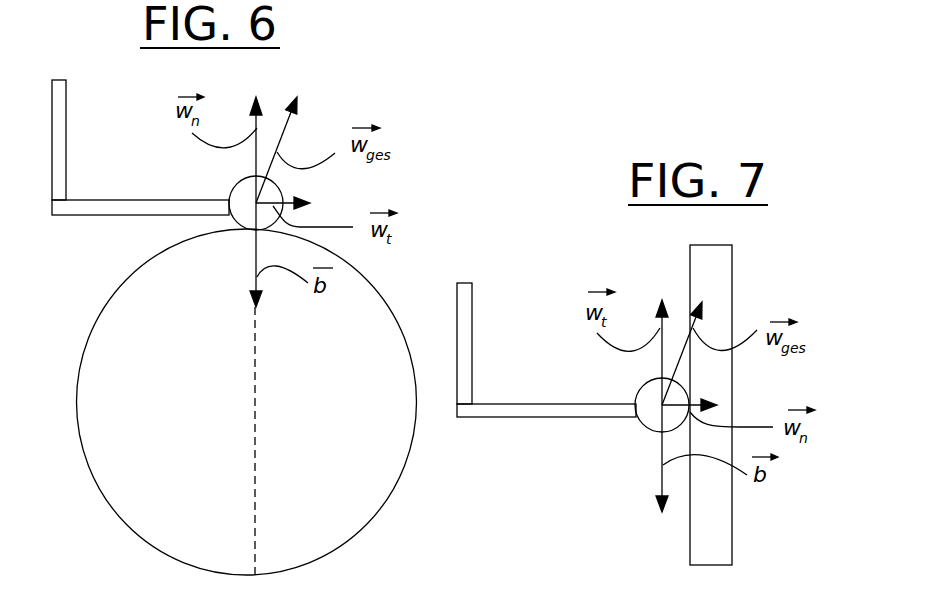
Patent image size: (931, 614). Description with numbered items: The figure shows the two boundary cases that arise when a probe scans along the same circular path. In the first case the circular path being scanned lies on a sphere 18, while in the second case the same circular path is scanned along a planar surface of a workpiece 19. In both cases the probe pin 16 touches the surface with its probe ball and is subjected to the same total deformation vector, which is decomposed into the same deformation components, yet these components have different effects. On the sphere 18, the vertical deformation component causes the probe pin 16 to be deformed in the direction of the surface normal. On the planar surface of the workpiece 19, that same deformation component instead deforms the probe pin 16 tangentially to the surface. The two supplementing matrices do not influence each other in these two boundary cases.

In FIG. 6, the probe pin 16 is at (116, 215).
In FIG. 7, the probe pin 16 is at (498, 417).
In FIG. 6, the sphere 18 is at (390, 497).
In FIG. 7, the workpiece 19 is at (732, 520).